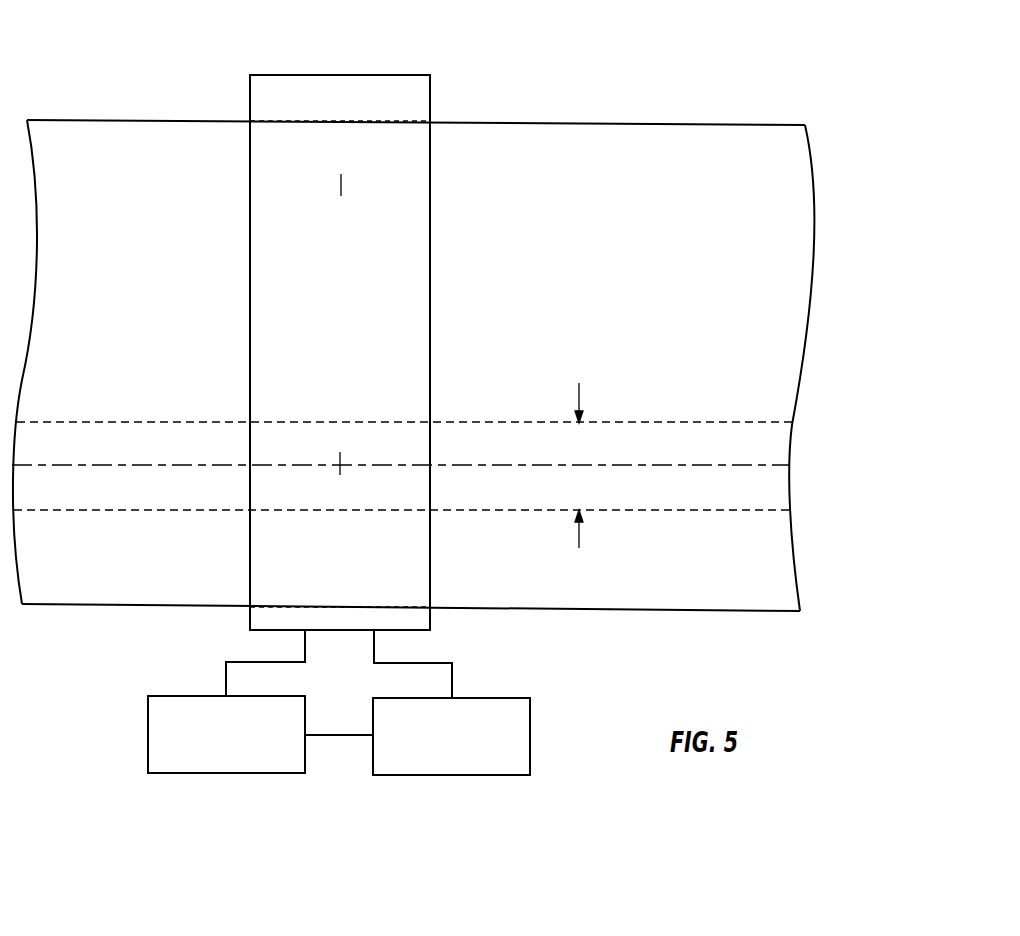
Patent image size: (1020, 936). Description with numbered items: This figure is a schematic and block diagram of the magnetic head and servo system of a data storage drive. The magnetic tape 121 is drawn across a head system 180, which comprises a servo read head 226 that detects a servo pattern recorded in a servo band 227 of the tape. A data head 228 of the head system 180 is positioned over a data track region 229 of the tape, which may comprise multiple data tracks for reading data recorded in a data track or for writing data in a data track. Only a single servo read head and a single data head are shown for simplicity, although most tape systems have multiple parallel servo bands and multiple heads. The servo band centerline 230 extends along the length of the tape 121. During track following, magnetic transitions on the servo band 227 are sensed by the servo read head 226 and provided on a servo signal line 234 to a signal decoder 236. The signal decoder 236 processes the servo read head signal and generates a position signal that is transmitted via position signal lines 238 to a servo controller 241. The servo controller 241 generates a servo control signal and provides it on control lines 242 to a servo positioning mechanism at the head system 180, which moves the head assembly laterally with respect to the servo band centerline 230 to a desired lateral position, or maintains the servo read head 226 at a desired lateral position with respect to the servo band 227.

The magnetic tape 121 is at (120, 118).
The head system 180 is at (316, 74).
The servo read head 226 is at (340, 460).
The servo band 227 is at (580, 395).
The data head 228 is at (341, 185).
The data track region 229 is at (652, 239).
The servo band centerline 230 is at (787, 467).
The servo signal line 234 is at (226, 677).
The signal decoder 236 is at (148, 737).
The position signal lines 238 is at (322, 737).
The servo controller 241 is at (530, 737).
The control lines 242 is at (452, 680).